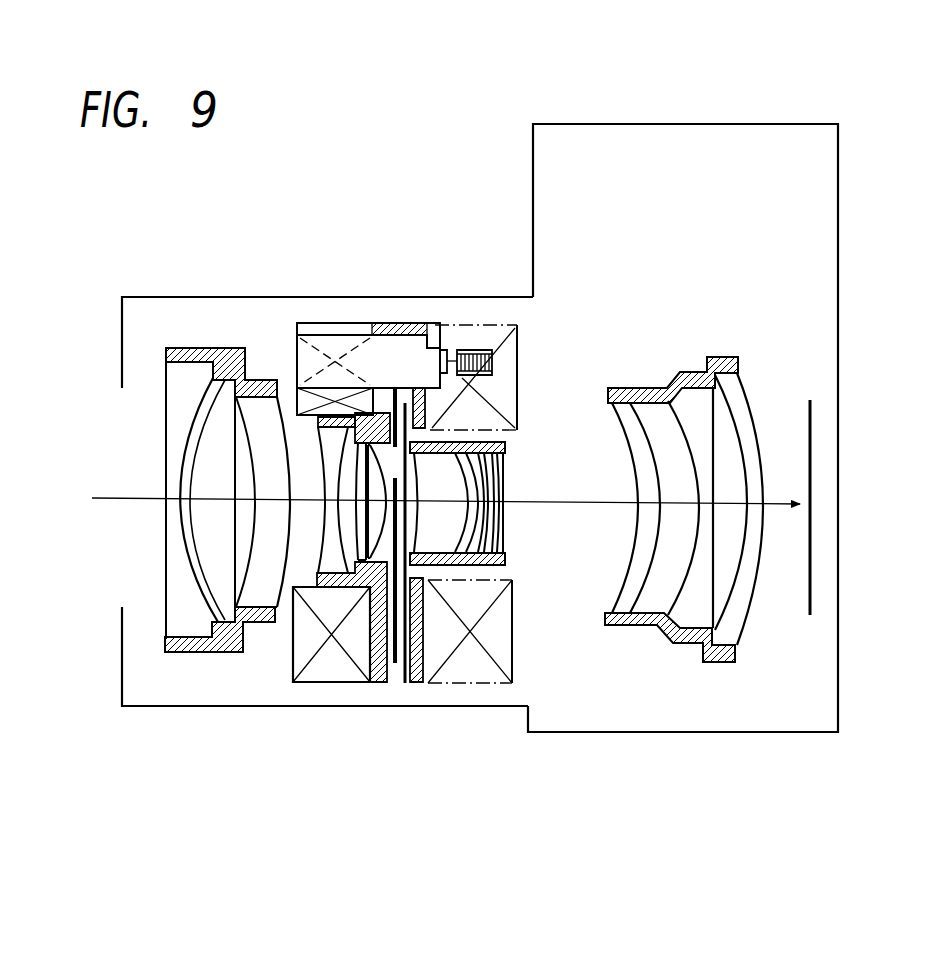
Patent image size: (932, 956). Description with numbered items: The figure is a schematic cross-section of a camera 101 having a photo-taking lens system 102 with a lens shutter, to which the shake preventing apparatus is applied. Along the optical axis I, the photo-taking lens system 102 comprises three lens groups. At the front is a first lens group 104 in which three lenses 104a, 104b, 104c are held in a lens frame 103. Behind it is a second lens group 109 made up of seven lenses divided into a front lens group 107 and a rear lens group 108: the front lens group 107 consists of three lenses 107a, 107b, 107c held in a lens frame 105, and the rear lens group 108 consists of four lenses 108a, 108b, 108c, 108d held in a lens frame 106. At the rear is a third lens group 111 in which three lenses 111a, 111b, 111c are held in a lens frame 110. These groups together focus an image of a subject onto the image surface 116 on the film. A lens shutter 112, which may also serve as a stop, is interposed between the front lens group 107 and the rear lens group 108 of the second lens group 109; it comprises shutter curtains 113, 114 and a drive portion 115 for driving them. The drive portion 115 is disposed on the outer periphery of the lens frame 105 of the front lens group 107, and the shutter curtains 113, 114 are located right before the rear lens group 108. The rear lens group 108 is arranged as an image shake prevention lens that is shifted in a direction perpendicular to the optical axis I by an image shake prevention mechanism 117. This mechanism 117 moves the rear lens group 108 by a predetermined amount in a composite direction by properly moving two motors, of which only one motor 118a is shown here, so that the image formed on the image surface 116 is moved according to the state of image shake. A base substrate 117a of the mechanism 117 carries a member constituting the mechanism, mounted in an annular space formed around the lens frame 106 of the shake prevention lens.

The camera 101 is at (738, 116).
The photo-taking lens system 102 is at (237, 332).
The lens frame 103 is at (163, 646).
The first lens group 104 is at (169, 590).
The lens 104a is at (182, 648).
The lens 104b is at (203, 626).
The lens 104c is at (258, 610).
The lens frame 105 is at (350, 565).
The lens frame 106 is at (500, 445).
The front lens group 107 is at (330, 649).
The lens 107a is at (325, 576).
The lens 107b is at (361, 563).
The lens 107c is at (378, 562).
The rear lens group 108 is at (524, 662).
The lens 108a is at (430, 567).
The lens 108b is at (468, 567).
The lens 108c is at (489, 567).
The lens 108d is at (500, 567).
The second lens group 109 is at (436, 671).
The lens frame 110 is at (686, 372).
The third lens group 111 is at (741, 608).
The lens 111a is at (642, 624).
The lens 111b is at (685, 628).
The lens 111c is at (742, 645).
The lens shutter 112 is at (411, 476).
The shutter curtain 113 is at (440, 404).
The shutter curtain 114 is at (413, 568).
The drive portion 115 is at (305, 617).
The image surface 116 is at (813, 457).
The image shake prevention mechanism 117 is at (496, 345).
The base substrate 117a is at (426, 326).
The motor 118a is at (396, 346).
The optical axis I is at (105, 497).